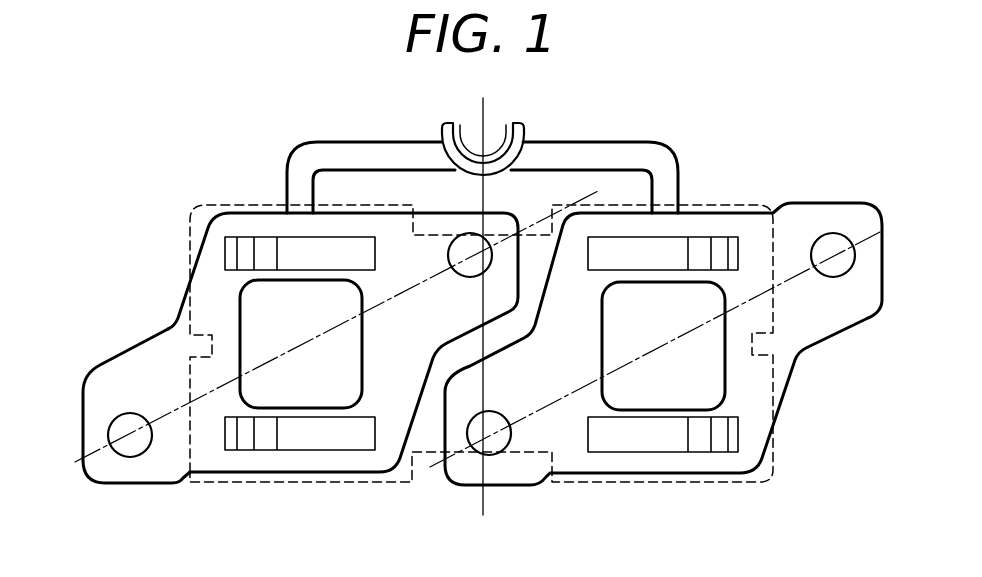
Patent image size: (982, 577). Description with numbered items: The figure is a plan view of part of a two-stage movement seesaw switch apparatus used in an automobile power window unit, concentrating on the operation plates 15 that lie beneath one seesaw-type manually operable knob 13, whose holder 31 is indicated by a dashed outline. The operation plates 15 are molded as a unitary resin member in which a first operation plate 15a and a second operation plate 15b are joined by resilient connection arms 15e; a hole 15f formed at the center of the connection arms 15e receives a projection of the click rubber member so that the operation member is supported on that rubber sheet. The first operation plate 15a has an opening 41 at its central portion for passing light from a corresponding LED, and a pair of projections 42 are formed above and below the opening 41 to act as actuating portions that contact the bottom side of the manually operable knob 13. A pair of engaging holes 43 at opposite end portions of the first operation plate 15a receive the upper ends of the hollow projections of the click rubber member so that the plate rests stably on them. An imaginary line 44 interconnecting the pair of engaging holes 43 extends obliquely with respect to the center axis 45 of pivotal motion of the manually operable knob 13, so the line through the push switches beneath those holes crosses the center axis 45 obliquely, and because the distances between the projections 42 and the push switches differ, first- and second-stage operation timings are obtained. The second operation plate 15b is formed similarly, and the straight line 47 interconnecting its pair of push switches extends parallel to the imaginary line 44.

The manually operable knob 13 is at (706, 195).
The operation plates 15 is at (156, 305).
The first operation plate 15a is at (135, 470).
The second operation plate 15b is at (733, 466).
The resilient connection arms 15e is at (644, 145).
The hole 15f is at (493, 135).
The holder 31 is at (742, 207).
The opening 41 is at (362, 390).
The projections 42 is at (265, 243).
The engaging holes 43 is at (450, 262).
The imaginary line 44 is at (100, 443).
The center axis 45 is at (483, 500).
The straight line 47 is at (897, 218).